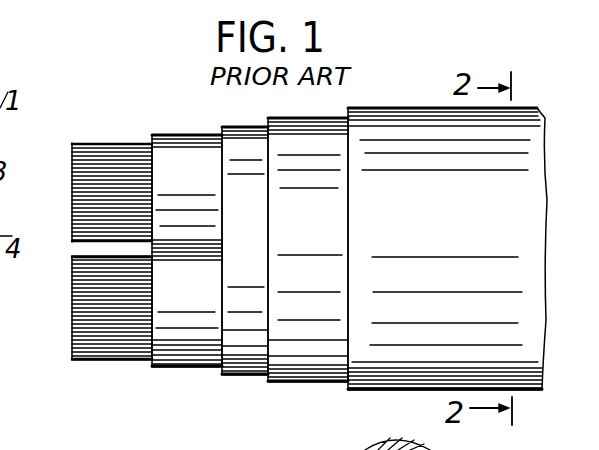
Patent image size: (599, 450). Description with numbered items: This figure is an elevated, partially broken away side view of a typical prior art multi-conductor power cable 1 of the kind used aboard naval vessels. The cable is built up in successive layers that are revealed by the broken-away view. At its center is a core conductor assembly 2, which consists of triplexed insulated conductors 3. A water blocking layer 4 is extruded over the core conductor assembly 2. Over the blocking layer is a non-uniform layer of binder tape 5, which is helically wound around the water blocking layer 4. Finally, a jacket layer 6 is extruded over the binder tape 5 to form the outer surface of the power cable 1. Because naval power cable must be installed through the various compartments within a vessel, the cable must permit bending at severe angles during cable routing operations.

The power cable 1 is at (178, 402).
The core conductor assembly 2 is at (58, 340).
The triplexed insulated conductors 3 is at (110, 165).
The water blocking layer 4 is at (242, 137).
The binder tape 5 is at (292, 378).
The jacket layer 6 is at (374, 368).